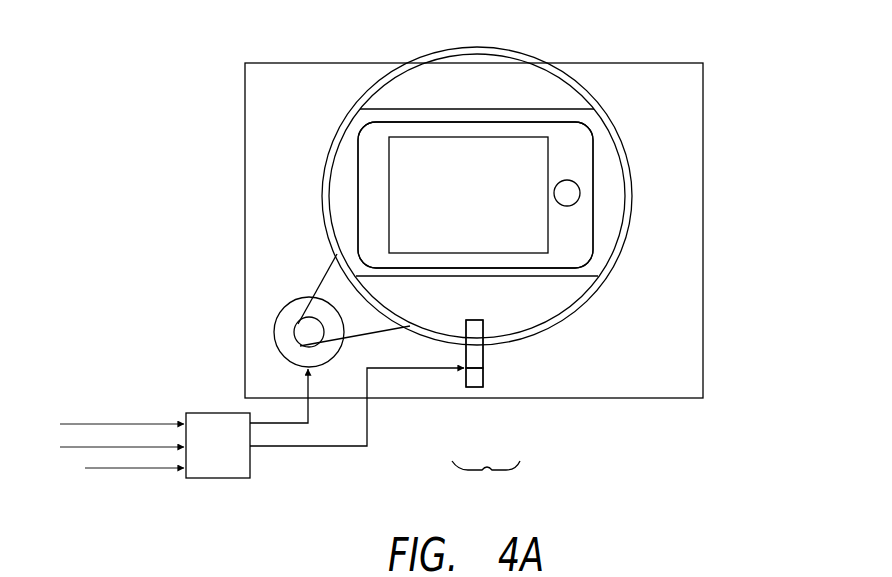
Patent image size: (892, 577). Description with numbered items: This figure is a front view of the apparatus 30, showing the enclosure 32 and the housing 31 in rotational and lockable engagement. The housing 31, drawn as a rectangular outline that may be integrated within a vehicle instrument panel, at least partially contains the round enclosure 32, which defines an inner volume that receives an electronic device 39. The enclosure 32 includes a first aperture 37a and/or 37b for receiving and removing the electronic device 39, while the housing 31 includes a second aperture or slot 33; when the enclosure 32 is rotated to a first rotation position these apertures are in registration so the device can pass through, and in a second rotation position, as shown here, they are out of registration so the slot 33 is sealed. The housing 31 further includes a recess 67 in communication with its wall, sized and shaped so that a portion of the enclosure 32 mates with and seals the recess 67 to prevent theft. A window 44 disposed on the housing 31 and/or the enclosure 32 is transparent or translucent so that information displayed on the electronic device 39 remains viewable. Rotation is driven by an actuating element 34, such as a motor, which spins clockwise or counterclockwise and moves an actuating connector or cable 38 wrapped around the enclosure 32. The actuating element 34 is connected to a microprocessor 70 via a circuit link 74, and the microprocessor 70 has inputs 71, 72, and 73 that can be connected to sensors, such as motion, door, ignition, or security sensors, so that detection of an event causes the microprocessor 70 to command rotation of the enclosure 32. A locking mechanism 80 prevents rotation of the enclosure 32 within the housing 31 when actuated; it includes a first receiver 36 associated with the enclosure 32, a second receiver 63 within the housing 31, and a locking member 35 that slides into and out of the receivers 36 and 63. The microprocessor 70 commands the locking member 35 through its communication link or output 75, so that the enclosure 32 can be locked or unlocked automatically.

The apparatus 30 is at (268, 36).
The housing 31 is at (353, 60).
The enclosure 32 is at (557, 94).
The second aperture 33 is at (393, 63).
The recess 67 is at (558, 67).
The first aperture 37a is at (343, 180).
The first aperture 37b is at (602, 153).
The electronic device 39 is at (569, 240).
The window 44 is at (560, 289).
The actuating connector 38 is at (320, 262).
The actuating element 34 is at (281, 331).
The locking member 35 is at (487, 363).
The first receiver 36 is at (483, 323).
The second receiver 63 is at (479, 390).
The locking mechanism 80 is at (486, 478).
The microprocessor 70 is at (197, 412).
The input 71 is at (112, 468).
The input 72 is at (90, 448).
The input 73 is at (81, 424).
The circuit link 74 is at (267, 422).
The communication link 75 is at (288, 447).